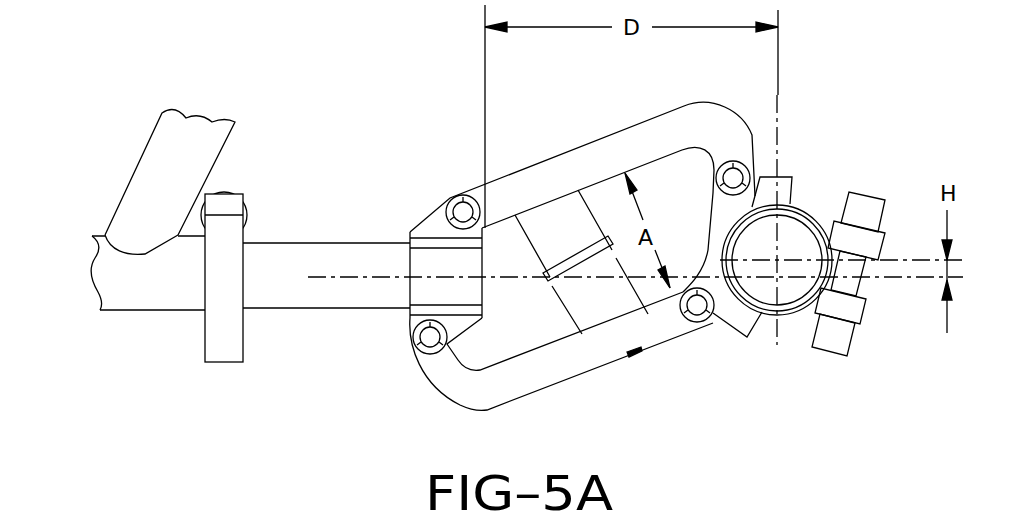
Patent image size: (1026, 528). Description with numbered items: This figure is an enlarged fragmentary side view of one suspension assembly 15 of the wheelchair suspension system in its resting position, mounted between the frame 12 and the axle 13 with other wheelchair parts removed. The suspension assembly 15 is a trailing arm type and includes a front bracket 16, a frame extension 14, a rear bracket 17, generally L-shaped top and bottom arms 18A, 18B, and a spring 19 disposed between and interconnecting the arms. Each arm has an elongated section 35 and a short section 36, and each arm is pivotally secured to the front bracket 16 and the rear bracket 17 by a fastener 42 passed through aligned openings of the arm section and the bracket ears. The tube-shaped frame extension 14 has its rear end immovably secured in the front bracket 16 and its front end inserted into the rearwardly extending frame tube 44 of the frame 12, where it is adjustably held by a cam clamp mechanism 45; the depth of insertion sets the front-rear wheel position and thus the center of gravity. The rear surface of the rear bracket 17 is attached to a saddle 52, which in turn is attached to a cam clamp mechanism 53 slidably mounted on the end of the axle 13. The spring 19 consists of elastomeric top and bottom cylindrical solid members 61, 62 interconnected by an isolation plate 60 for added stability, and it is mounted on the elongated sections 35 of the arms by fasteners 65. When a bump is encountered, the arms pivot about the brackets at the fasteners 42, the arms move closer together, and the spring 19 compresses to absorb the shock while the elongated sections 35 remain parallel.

The frame 12 is at (216, 163).
The axle 13 is at (794, 237).
The frame extension 14 is at (268, 243).
The suspension assembly 15 is at (571, 255).
The front bracket 16 is at (407, 258).
The rear bracket 17 is at (703, 243).
The top arm 18A is at (610, 133).
The bottom arm 18B is at (550, 388).
The spring 19 is at (573, 268).
The elongated section 35 is at (628, 137).
The short section 36 is at (717, 135).
The fastener 42 is at (463, 205).
The frame tube 44 is at (180, 296).
The cam clamp mechanism 45 is at (212, 362).
The saddle 52 is at (752, 207).
The cam clamp mechanism 53 is at (858, 193).
The isolation plate 60 is at (545, 278).
The top cylindrical-shaped solid member 61 is at (563, 233).
The bottom cylindrical-shaped solid member 62 is at (600, 296).
The fastener 65 is at (640, 355).